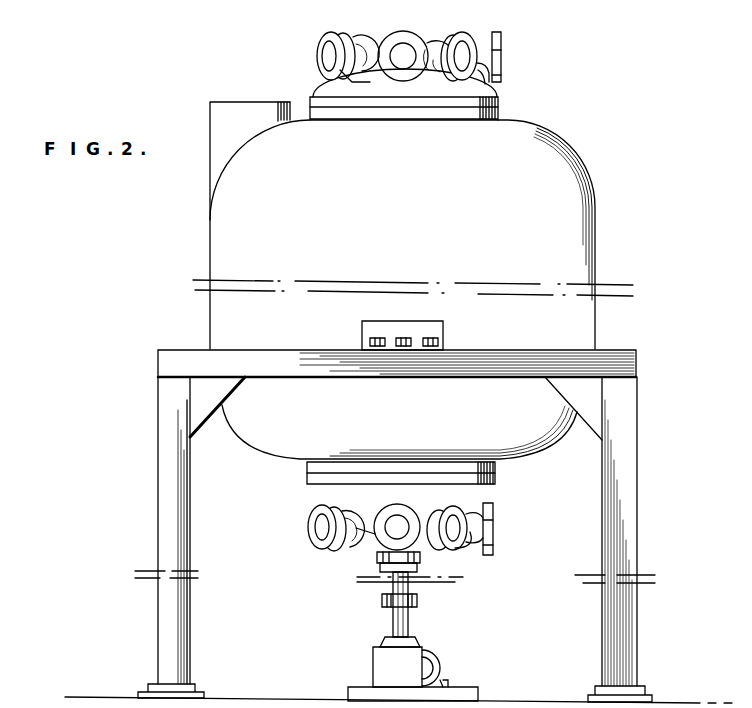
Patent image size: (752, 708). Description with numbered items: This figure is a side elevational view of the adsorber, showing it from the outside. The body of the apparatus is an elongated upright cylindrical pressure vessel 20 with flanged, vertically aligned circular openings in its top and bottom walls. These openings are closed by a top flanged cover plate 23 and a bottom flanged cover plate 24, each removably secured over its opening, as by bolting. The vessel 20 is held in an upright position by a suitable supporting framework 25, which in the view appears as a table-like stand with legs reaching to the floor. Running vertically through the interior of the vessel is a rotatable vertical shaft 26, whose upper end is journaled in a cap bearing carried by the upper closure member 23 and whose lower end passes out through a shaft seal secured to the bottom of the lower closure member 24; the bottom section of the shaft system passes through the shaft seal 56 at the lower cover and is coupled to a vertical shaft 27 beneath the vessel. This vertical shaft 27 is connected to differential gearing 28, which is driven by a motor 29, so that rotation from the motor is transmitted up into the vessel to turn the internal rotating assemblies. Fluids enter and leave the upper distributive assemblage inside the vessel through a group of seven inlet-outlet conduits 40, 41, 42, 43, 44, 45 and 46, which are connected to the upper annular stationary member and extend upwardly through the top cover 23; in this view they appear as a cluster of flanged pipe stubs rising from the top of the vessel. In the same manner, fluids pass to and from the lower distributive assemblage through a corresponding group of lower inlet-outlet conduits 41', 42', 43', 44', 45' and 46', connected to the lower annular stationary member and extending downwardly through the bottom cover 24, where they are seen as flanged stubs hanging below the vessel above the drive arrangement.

The pressure vessel 20 is at (604, 250).
The top flanged cover plate 23 is at (492, 86).
The bottom flanged cover plate 24 is at (493, 486).
The framework 25 is at (650, 495).
The rotatable vertical shaft 26 is at (438, 574).
The vertical shaft 27 is at (420, 626).
The differential gearing 28 is at (363, 671).
The motor 29 is at (446, 668).
The inlet-outlet conduit 40 is at (502, 48).
The inlet-outlet conduit 41 is at (442, 41).
The inlet-outlet conduit 42 is at (403, 40).
The inlet-outlet conduit 43 is at (359, 45).
The inlet-outlet conduit 44 is at (336, 40).
The inlet-outlet conduit 45 is at (385, 70).
The inlet-outlet conduit 46 is at (469, 43).
The inlet-outlet conduit 41' is at (465, 537).
The inlet-outlet conduit 42' is at (387, 518).
The inlet-outlet conduit 43' is at (335, 543).
The inlet-outlet conduit 44' is at (316, 518).
The inlet-outlet conduit 45' is at (401, 511).
The inlet-outlet conduit 46' is at (447, 518).
The shaft seal 56 is at (377, 565).